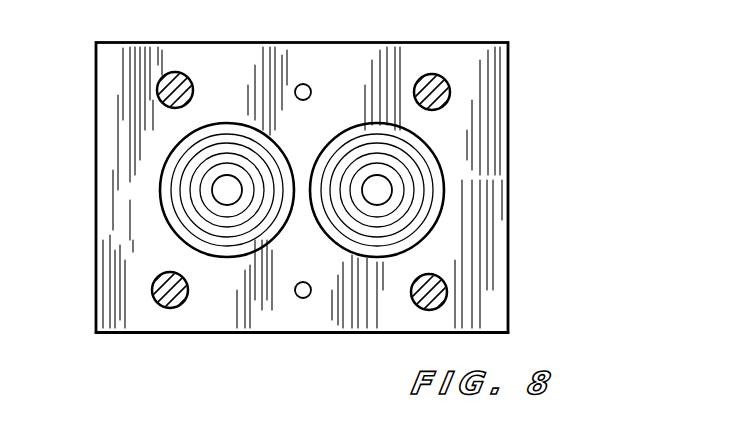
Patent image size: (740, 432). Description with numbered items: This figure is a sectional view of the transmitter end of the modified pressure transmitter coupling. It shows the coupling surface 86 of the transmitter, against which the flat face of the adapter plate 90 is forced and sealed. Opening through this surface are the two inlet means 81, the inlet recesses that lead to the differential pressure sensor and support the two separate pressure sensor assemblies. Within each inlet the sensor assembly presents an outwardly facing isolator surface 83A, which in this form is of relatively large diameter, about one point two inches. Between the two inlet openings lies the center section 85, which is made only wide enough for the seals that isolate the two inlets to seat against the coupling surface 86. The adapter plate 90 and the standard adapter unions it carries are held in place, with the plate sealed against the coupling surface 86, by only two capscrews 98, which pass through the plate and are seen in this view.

The inlet means 81 is at (433, 227).
The isolator surfaces 83A is at (183, 168).
The center section 85 is at (302, 170).
The coupling surface 86 is at (488, 202).
The adapter plate 90 is at (300, 336).
The capscrews 98 is at (157, 84).